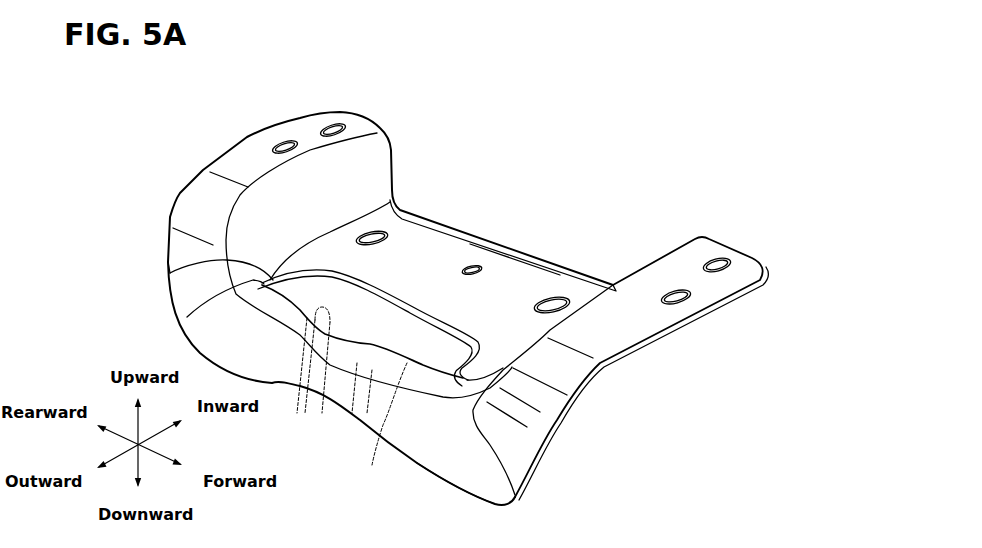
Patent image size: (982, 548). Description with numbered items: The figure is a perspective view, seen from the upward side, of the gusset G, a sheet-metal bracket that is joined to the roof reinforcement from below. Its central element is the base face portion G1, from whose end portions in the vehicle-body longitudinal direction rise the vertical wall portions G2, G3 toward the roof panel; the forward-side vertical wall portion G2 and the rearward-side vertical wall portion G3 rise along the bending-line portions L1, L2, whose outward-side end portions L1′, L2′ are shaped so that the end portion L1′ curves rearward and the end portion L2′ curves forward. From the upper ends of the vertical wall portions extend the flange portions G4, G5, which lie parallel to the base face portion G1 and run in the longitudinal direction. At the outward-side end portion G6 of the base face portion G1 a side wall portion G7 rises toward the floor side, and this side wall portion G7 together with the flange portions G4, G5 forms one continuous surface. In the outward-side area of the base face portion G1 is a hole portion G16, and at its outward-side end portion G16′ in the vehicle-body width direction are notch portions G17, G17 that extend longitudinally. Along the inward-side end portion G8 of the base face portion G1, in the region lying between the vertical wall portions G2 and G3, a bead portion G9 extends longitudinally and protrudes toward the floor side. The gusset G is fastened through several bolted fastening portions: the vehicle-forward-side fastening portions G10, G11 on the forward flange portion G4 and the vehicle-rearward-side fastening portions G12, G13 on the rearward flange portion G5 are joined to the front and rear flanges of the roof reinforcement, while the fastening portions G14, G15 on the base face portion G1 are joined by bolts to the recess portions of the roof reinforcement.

The gusset G is at (658, 163).
The base face portion G1 is at (523, 290).
The vertical wall portion G2 is at (651, 262).
The vertical wall portion G3 is at (380, 162).
The flange portion G4 is at (635, 336).
The flange portion G5 is at (303, 128).
The outward-side end portion G6 is at (378, 430).
The side wall portion G7 is at (427, 446).
The inward-side end portion G8 is at (463, 222).
The bead portion G9 is at (510, 257).
The fastening portion G10 is at (691, 297).
The fastening portion G11 is at (729, 265).
The fastening portion G12 is at (280, 145).
The fastening portion G13 is at (330, 122).
The fastening portion G14 is at (556, 298).
The fastening portion G15 is at (378, 232).
The hole portion G16 is at (393, 329).
The outward-side end portion G16′ is at (300, 400).
The notch portion G17 is at (187, 317).
The bending-line portion L1 is at (567, 395).
The outward-side end portion L1′ is at (540, 412).
The bending-line portion L2 is at (350, 217).
The outward-side end portion L2′ is at (170, 273).